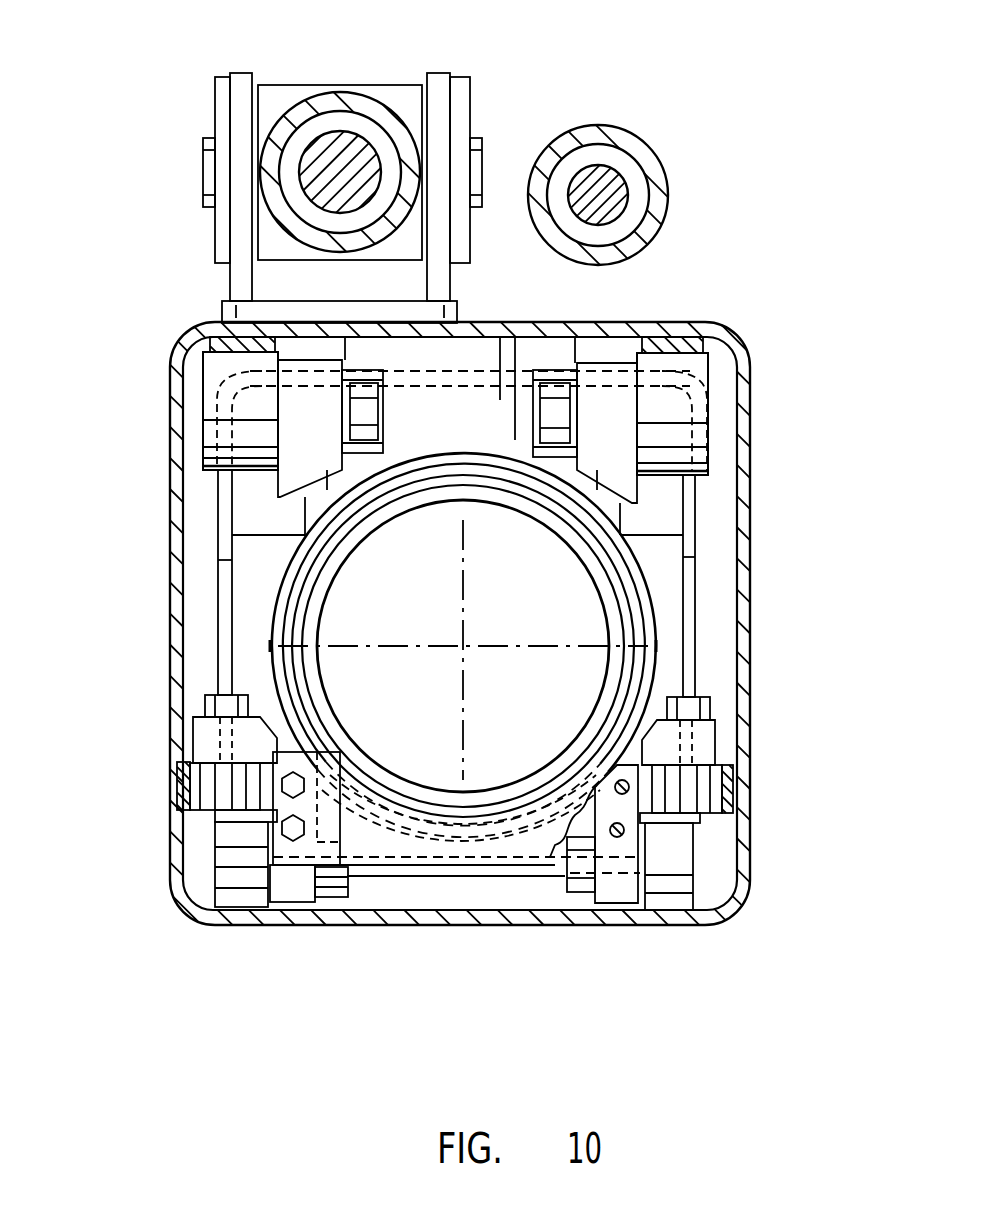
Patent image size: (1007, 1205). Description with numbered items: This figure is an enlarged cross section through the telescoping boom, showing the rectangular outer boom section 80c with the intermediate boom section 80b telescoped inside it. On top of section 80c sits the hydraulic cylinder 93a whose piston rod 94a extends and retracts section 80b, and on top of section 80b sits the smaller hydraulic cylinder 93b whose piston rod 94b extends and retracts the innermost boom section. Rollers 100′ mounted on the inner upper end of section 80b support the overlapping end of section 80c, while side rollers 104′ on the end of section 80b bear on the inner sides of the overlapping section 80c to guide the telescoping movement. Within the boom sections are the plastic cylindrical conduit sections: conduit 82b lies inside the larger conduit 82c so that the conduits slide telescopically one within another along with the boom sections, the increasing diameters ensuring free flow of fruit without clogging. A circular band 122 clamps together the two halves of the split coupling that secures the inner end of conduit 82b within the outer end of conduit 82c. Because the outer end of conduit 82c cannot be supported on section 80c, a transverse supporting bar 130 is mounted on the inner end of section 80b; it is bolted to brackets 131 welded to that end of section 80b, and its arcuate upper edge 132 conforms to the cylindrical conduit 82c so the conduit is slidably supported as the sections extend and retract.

The hydraulic cylinder 93a is at (358, 94).
The piston rod 94a is at (338, 138).
The hydraulic cylinder 93b is at (604, 128).
The piston rod 94b is at (612, 178).
The boom section 80c is at (650, 328).
The boom section 80b is at (700, 578).
The rollers 100′ is at (210, 437).
The conduit section 82b is at (316, 612).
The conduit section 82c is at (318, 698).
The circular band 122 is at (277, 610).
The side rollers 104′ is at (200, 790).
The transverse supporting bar 130 is at (383, 852).
The arcuate upper edge 132 is at (356, 788).
The brackets 131 is at (605, 890).